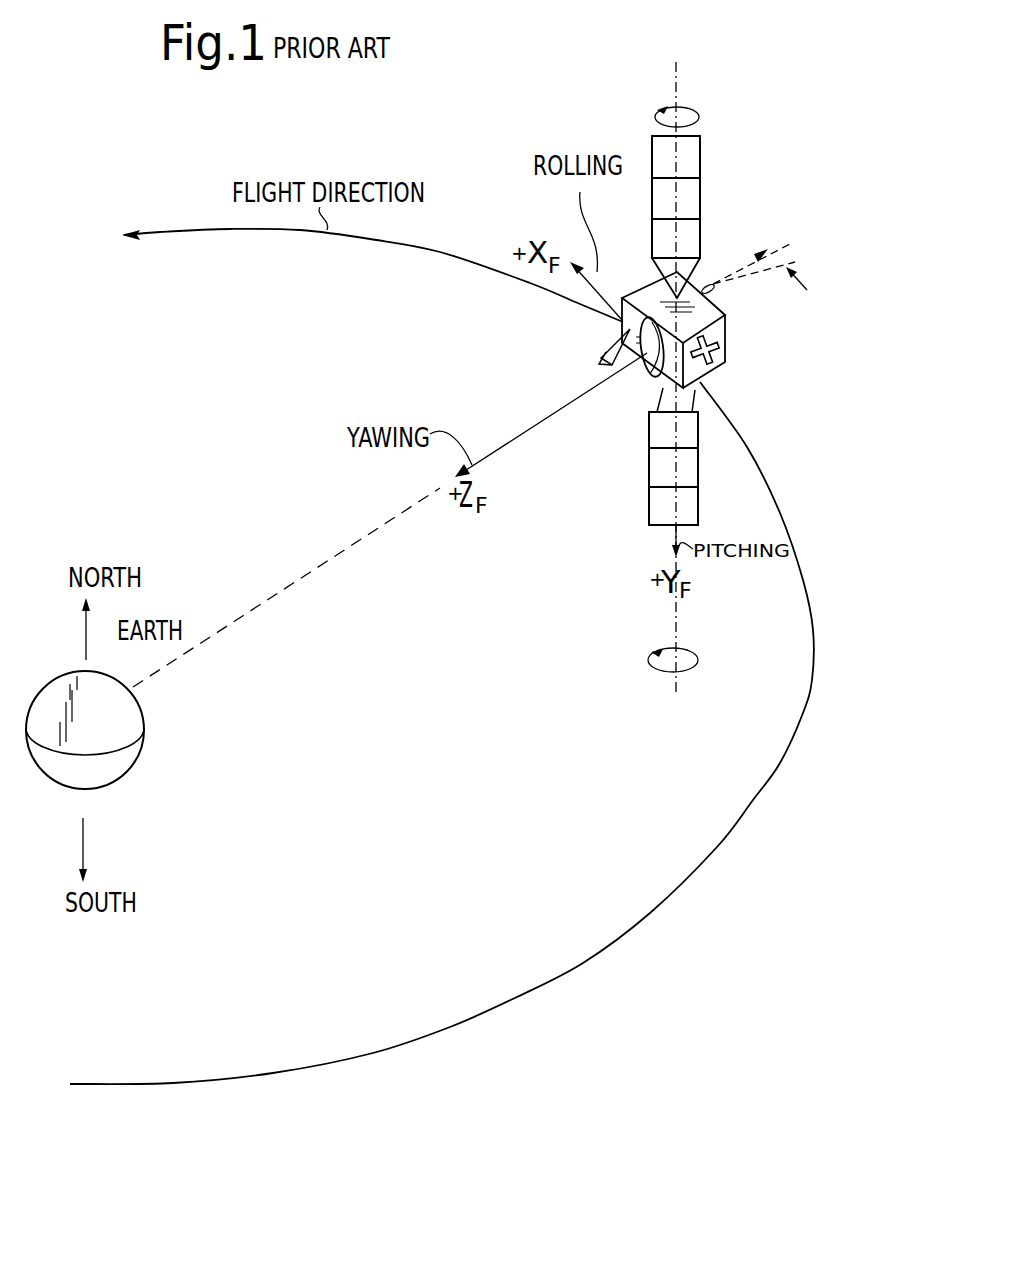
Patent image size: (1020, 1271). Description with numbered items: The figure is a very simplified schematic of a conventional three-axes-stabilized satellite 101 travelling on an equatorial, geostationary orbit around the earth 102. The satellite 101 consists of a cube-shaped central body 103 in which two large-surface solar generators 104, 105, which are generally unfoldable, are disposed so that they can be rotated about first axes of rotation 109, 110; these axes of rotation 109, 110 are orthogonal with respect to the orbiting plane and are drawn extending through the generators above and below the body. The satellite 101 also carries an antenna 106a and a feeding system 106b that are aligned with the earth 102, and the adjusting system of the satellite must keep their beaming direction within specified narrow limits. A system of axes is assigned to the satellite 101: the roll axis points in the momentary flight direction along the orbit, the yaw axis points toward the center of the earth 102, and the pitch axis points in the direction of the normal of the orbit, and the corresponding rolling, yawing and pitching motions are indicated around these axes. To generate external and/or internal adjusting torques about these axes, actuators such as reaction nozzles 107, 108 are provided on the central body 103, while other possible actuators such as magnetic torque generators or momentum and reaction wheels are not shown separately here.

The satellite 101 is at (828, 484).
The earth 102 is at (133, 760).
The cube-shaped central body 103 is at (698, 318).
The solar generator 104 is at (685, 197).
The solar generator 105 is at (648, 472).
The antenna 106a is at (635, 373).
The feeding system 106b is at (610, 338).
The reaction nozzle 107 is at (717, 342).
The reaction nozzle 108 is at (710, 284).
The first axis of rotation 109 is at (677, 82).
The first axis of rotation 110 is at (675, 635).